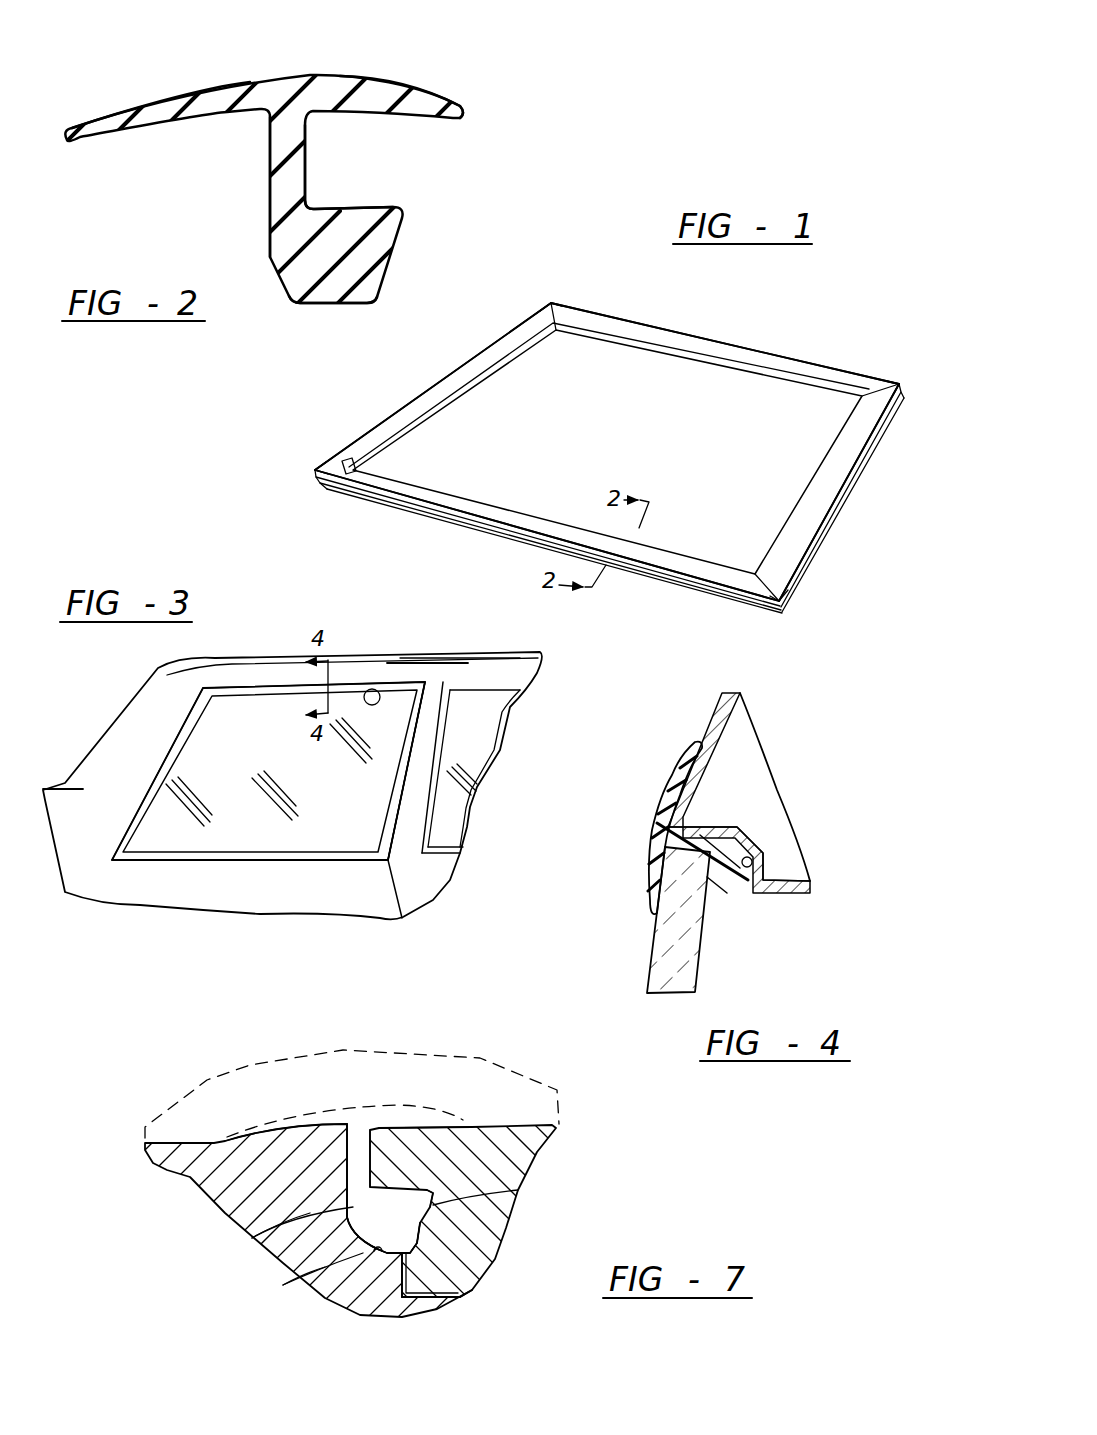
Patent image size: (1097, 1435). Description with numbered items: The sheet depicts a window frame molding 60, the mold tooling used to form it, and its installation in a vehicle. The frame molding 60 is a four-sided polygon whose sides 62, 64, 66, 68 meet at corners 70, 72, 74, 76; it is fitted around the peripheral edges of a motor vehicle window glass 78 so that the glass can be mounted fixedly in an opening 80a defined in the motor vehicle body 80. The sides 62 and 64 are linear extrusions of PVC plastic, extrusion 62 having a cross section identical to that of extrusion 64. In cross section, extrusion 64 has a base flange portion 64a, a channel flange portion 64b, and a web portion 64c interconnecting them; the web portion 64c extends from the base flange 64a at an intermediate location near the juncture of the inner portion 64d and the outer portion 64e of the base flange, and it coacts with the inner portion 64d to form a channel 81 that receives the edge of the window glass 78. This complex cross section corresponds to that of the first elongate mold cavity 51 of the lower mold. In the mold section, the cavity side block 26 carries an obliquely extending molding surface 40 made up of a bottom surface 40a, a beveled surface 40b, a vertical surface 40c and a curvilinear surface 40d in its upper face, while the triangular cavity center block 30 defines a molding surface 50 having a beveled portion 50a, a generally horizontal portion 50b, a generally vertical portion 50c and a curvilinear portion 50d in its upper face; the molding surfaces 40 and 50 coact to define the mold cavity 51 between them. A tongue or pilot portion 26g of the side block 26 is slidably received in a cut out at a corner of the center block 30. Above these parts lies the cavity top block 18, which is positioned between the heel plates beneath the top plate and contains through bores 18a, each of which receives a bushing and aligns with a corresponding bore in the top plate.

In FIG. 7, the cavity top block 18 is at (250, 1063).
In FIG. 7, the through bore 18a is at (450, 1117).
In FIG. 7, the cavity side block 26 is at (189, 1140).
In FIG. 7, the tongue or pilot portion 26g is at (433, 1306).
In FIG. 7, the cavity center block 30 is at (545, 1118).
In FIG. 7, the molding surface 40 is at (349, 1118).
In FIG. 7, the bottom surface 40a is at (372, 1246).
In FIG. 7, the beveled surface 40b is at (283, 1285).
In FIG. 7, the vertical surface 40c is at (252, 1238).
In FIG. 7, the curvilinear surface 40d is at (318, 1124).
In FIG. 7, the molding surface 50 is at (396, 1118).
In FIG. 7, the beveled portion 50a is at (425, 1236).
In FIG. 7, the generally horizontal portion 50b is at (437, 1205).
In FIG. 7, the generally vertical portion 50c is at (364, 1175).
In FIG. 7, the curvilinear portion 50d is at (430, 1127).
In FIG. 7, the first elongate mold cavity 51 is at (396, 1237).
In FIG. 1, the frame molding 60 is at (667, 318).
In FIG. 3, the frame molding 60 is at (217, 864).
In FIG. 4, the frame molding 60 is at (640, 828).
In FIG. 1, the side (linear extrusion) 62 is at (423, 396).
In FIG. 3, the side (linear extrusion) 62 is at (174, 766).
In FIG. 1, the side (linear extrusion) 64 is at (450, 524).
In FIG. 3, the side (linear extrusion) 64 is at (307, 845).
In FIG. 2, the base flange portion 64a is at (385, 70).
In FIG. 2, the channel flange portion 64b is at (343, 305).
In FIG. 2, the web portion 64c is at (270, 196).
In FIG. 2, the inner portion of base flange 64d is at (440, 93).
In FIG. 2, the outer portion of base flange 64e is at (190, 95).
In FIG. 1, the side 66 is at (838, 494).
In FIG. 3, the side 66 is at (386, 810).
In FIG. 1, the side 68 is at (733, 338).
In FIG. 3, the side 68 is at (273, 700).
In FIG. 4, the side 68 is at (647, 867).
In FIG. 1, the corner 70 is at (313, 489).
In FIG. 1, the corner 72 is at (783, 609).
In FIG. 1, the corner 74 is at (905, 378).
In FIG. 1, the corner 76 is at (538, 293).
In FIG. 3, the window glass 78 is at (270, 784).
In FIG. 4, the window glass 78 is at (697, 958).
In FIG. 3, the motor vehicle body 80 is at (108, 769).
In FIG. 4, the motor vehicle body 80 is at (717, 710).
In FIG. 3, the opening 80a is at (377, 689).
In FIG. 4, the opening 80a is at (760, 853).
In FIG. 2, the channel 81 is at (354, 185).